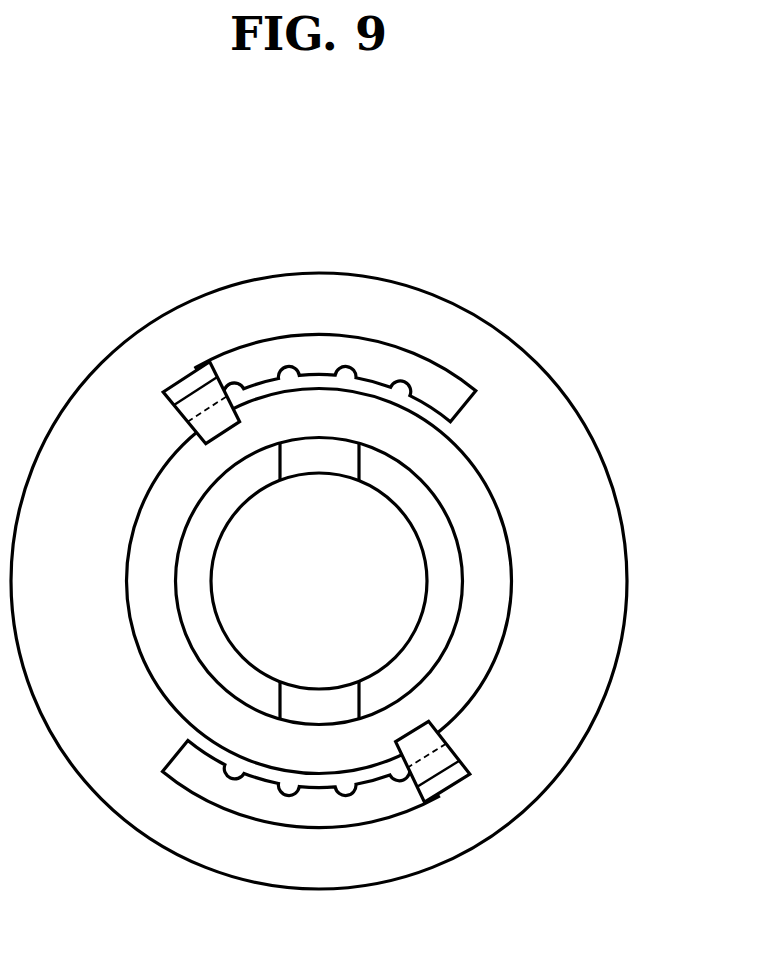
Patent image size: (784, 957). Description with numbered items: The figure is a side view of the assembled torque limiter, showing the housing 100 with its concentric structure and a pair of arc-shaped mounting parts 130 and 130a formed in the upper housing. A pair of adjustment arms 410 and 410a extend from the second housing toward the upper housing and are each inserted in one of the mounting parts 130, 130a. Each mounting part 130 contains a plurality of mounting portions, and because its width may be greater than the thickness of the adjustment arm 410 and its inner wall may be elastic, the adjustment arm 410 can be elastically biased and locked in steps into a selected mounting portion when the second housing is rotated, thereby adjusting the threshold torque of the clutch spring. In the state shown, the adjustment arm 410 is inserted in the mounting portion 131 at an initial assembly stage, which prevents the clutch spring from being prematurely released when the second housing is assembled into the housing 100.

The housing 100 is at (583, 420).
The mounting part 130 is at (417, 352).
The mounting part 130a is at (268, 810).
The mounting portion 131 is at (243, 403).
The adjustment arm 410 is at (198, 402).
The adjustment arm 410a is at (440, 767).